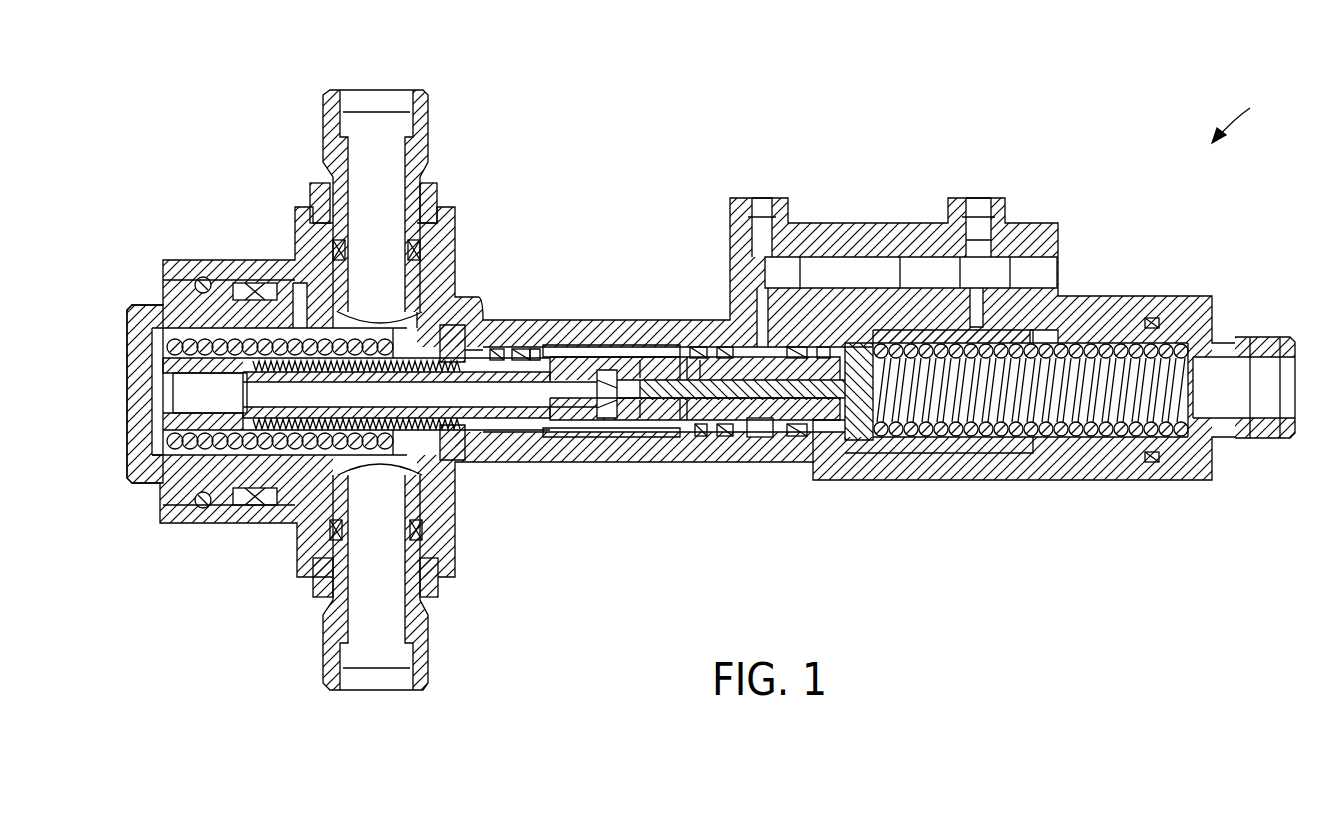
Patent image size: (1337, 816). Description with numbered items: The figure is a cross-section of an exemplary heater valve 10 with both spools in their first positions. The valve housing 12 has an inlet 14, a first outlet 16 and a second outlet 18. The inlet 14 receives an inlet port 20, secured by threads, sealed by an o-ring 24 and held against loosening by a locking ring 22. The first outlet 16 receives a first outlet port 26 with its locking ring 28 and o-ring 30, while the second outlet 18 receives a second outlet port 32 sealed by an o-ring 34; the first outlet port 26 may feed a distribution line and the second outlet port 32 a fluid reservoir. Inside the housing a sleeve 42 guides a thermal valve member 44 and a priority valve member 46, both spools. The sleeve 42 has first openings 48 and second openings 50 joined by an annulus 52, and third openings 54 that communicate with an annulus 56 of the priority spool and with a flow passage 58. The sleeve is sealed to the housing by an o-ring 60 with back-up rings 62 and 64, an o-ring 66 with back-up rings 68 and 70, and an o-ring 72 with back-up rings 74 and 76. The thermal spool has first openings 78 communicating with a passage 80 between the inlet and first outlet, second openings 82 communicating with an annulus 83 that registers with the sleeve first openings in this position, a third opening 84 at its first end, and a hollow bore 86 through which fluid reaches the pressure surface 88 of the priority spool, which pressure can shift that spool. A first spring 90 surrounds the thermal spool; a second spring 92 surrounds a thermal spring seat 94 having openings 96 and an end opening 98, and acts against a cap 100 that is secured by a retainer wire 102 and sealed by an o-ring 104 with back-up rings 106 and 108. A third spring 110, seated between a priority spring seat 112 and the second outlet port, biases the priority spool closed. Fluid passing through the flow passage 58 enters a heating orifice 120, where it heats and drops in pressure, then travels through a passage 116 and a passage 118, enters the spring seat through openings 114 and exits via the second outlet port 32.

The heater valve 10 is at (1248, 113).
The valve housing 12 is at (1037, 223).
The inlet 14 is at (312, 222).
The first outlet 16 is at (312, 577).
The second outlet 18 is at (1133, 315).
The inlet port 20 is at (428, 125).
The locking ring 22 is at (437, 192).
The o-ring 24 is at (435, 245).
The first outlet port 26 is at (330, 688).
The locking ring 28 is at (315, 597).
The o-ring 30 is at (330, 540).
The second outlet port 32 is at (1247, 340).
The o-ring 34 is at (1157, 323).
The sleeve 42 is at (485, 447).
The thermal valve member 44 is at (607, 410).
The priority valve member 46 is at (885, 440).
The first openings 48 is at (540, 353).
The second openings 50 is at (690, 355).
The annulus 52 is at (632, 350).
The third openings 54 is at (782, 467).
The annulus 56 is at (745, 437).
The flow passage 58 is at (758, 298).
The o-ring 60 is at (503, 347).
The back-up ring 62 is at (495, 348).
The back-up ring 64 is at (520, 345).
The o-ring 66 is at (830, 455).
The back-up ring 68 is at (800, 437).
The back-up ring 70 is at (830, 445).
The o-ring 72 is at (840, 437).
The back-up ring 74 is at (813, 437).
The back-up ring 76 is at (857, 437).
The first openings 78 is at (437, 448).
The passage 80 is at (330, 323).
The second openings 82 is at (625, 348).
The annulus 83 is at (580, 410).
The third opening 84 is at (175, 395).
The hollow bore 86 is at (645, 355).
The pressure surface 88 is at (655, 400).
The first spring 90 is at (210, 333).
The second spring 92 is at (160, 478).
The thermal spring seat 94 is at (435, 475).
The openings 96 is at (170, 432).
The opening 98 is at (200, 422).
The cap 100 is at (132, 345).
The retainer wire 102 is at (203, 280).
The o-ring 104 is at (243, 505).
The back-up ring 106 is at (238, 505).
The back-up ring 108 is at (273, 505).
The third spring 110 is at (1050, 450).
The priority spring seat 112 is at (962, 450).
The openings 114 is at (860, 345).
The passage 116 is at (1040, 330).
The passage 118 is at (1060, 322).
The heating orifice 120 is at (897, 268).